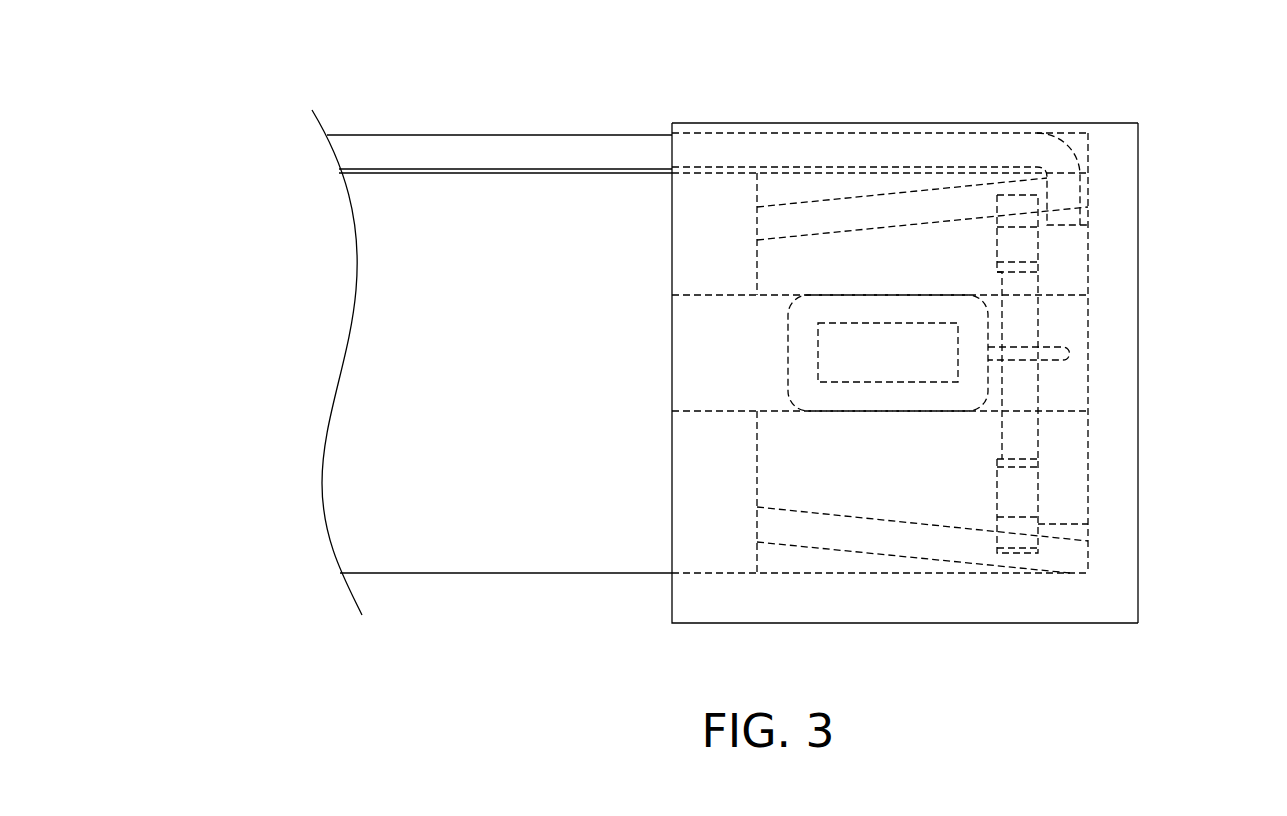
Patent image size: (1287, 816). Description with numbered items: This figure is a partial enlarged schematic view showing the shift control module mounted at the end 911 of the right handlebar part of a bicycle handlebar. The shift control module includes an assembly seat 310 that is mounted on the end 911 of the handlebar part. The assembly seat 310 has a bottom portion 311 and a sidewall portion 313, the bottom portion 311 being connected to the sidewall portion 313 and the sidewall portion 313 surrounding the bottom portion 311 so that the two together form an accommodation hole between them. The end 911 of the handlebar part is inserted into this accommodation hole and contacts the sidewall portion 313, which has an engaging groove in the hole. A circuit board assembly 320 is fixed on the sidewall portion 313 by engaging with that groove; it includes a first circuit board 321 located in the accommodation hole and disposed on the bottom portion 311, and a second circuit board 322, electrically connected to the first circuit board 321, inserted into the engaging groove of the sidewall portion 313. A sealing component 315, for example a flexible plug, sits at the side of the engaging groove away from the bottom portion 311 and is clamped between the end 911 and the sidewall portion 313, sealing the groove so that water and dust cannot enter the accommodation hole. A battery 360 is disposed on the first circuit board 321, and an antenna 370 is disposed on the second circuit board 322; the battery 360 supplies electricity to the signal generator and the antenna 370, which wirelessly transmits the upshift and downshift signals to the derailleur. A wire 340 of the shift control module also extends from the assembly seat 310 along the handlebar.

The assembly seat 310 is at (1152, 63).
The bottom portion 311 is at (1125, 160).
The sidewall portion 313 is at (907, 123).
The sealing component 315 is at (730, 357).
The circuit board assembly 320 is at (1198, 223).
The first circuit board 321 is at (1068, 244).
The second circuit board 322 is at (980, 332).
The wire 340 is at (499, 148).
The battery 360 is at (1023, 433).
The antenna 370 is at (892, 370).
The end of the right handlebar part 911 is at (507, 542).